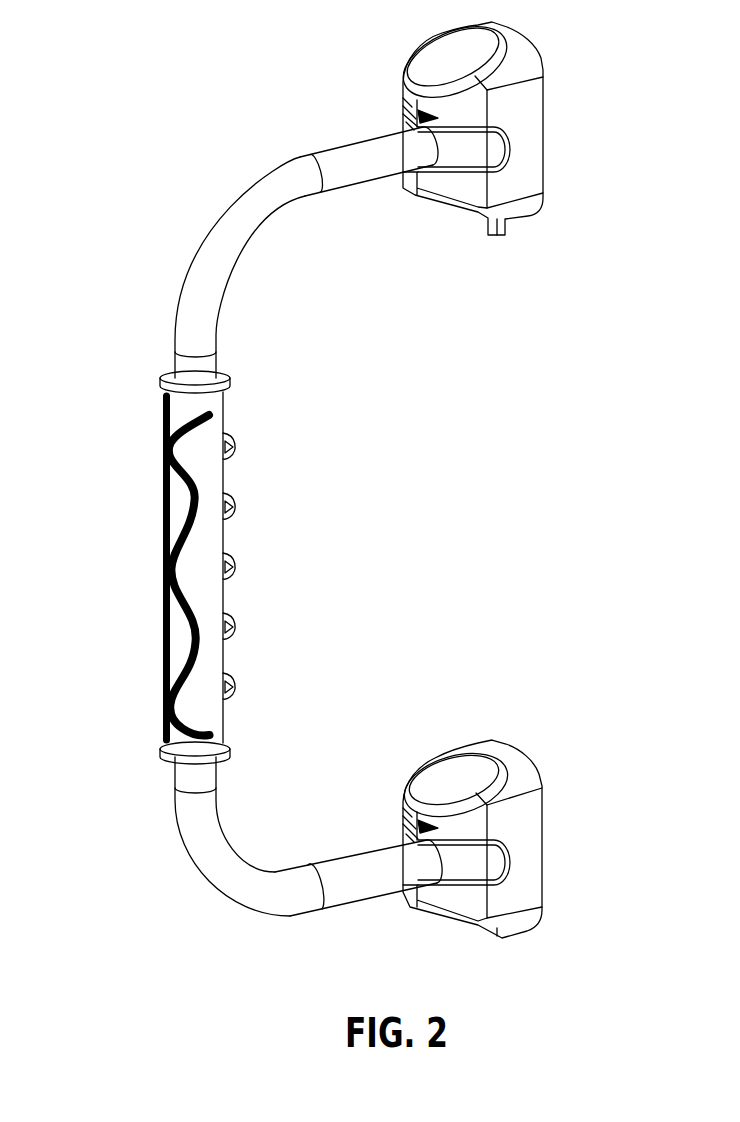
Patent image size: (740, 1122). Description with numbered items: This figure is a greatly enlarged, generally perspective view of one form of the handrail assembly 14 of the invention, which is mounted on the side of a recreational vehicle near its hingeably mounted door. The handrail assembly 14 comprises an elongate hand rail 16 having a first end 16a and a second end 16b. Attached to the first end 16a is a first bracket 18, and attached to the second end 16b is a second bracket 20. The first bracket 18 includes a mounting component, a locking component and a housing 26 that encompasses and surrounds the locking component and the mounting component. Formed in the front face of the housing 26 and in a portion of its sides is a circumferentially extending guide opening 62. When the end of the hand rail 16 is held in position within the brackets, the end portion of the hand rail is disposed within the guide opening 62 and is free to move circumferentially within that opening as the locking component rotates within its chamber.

The handrail assembly 14 is at (200, 167).
The elongate hand rail 16 is at (228, 538).
The first end 16a is at (347, 188).
The second end 16b is at (357, 907).
The first bracket 18 is at (544, 105).
The second bracket 20 is at (542, 827).
The housing 26 is at (517, 60).
The guide opening 62 is at (476, 152).